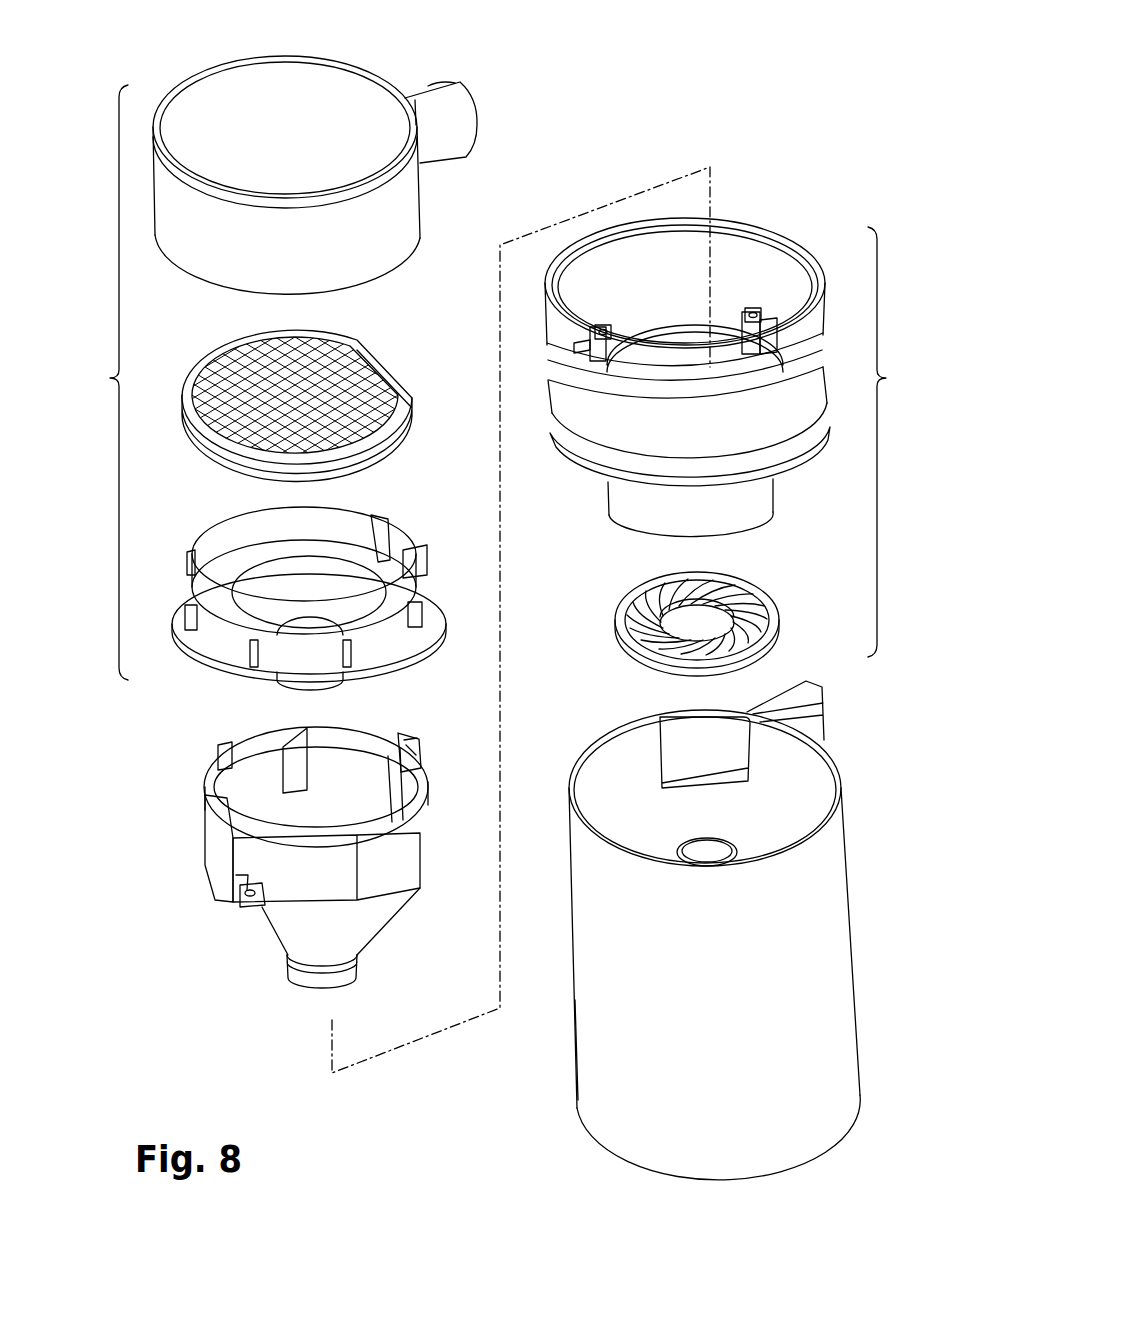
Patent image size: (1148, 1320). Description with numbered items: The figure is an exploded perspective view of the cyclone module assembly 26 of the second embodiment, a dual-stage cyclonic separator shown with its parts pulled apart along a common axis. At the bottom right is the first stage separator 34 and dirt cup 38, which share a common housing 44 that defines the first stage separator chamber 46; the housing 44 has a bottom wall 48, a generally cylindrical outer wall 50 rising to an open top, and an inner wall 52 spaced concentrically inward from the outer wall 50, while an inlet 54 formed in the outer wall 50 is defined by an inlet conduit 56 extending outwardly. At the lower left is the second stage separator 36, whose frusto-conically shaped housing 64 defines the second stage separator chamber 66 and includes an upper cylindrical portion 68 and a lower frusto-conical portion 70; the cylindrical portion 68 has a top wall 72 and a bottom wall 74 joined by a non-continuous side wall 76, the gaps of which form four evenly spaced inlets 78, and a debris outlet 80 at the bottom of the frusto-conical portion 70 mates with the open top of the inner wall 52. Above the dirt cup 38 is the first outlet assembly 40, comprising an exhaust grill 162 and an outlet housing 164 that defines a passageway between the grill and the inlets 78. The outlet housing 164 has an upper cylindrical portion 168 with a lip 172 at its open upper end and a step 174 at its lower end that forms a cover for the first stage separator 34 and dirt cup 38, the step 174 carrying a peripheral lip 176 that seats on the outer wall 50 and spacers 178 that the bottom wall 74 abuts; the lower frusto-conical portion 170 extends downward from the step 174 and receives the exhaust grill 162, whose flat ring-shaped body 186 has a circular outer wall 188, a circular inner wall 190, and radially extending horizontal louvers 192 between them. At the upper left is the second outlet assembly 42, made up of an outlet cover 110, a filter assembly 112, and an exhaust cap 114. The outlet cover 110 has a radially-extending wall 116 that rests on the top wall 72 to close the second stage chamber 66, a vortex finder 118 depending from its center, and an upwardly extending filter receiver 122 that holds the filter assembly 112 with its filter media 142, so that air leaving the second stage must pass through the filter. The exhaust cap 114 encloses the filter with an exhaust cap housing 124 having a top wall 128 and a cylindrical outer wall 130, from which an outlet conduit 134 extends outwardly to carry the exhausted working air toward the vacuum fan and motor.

The cyclone module assembly 26 is at (646, 80).
The first stage separator 34 is at (716, 934).
The second stage separator 36 is at (301, 851).
The dirt cup 38 is at (860, 1010).
The first outlet assembly 40 is at (893, 442).
The second outlet assembly 42 is at (103, 382).
The housing 44 is at (575, 900).
The first stage separator chamber 46 is at (628, 810).
The bottom wall 48 is at (822, 1155).
The outer wall 50 is at (855, 880).
The inner wall 52 is at (720, 835).
The inlet 54 is at (713, 748).
The inlet conduit 56 is at (818, 700).
The housing 64 is at (423, 790).
The second stage separator chamber 66 is at (332, 813).
The upper cylindrical portion 68 is at (315, 727).
The lower frusto-conical portion 70 is at (372, 925).
The top wall 72 is at (243, 745).
The bottom wall 74 is at (418, 888).
The side wall 76 is at (223, 862).
The inlets 78 is at (220, 760).
The debris outlet 80 is at (318, 985).
The outlet cover 110 is at (310, 578).
The filter assembly 112 is at (288, 397).
The exhaust cap 114 is at (320, 156).
The radially-extending wall 116 is at (437, 612).
The vortex finder 118 is at (340, 682).
The filter receiver 122 is at (232, 635).
The exhaust cap housing 124 is at (390, 265).
The top wall 128 is at (245, 97).
The outer wall 130 is at (408, 183).
The outlet conduit 134 is at (433, 83).
The filter media 142 is at (365, 370).
The exhaust grill 162 is at (698, 626).
The outlet housing 164 is at (702, 346).
The upper cylindrical portion 168 is at (797, 395).
The lower frusto-conical portion 170 is at (745, 508).
The lip 172 is at (745, 235).
The step 174 is at (722, 338).
The lip 176 is at (805, 445).
The spacers 178 is at (752, 340).
The body 186 is at (630, 595).
The outer wall 188 is at (665, 672).
The inner wall 190 is at (735, 600).
The louvers 192 is at (630, 660).